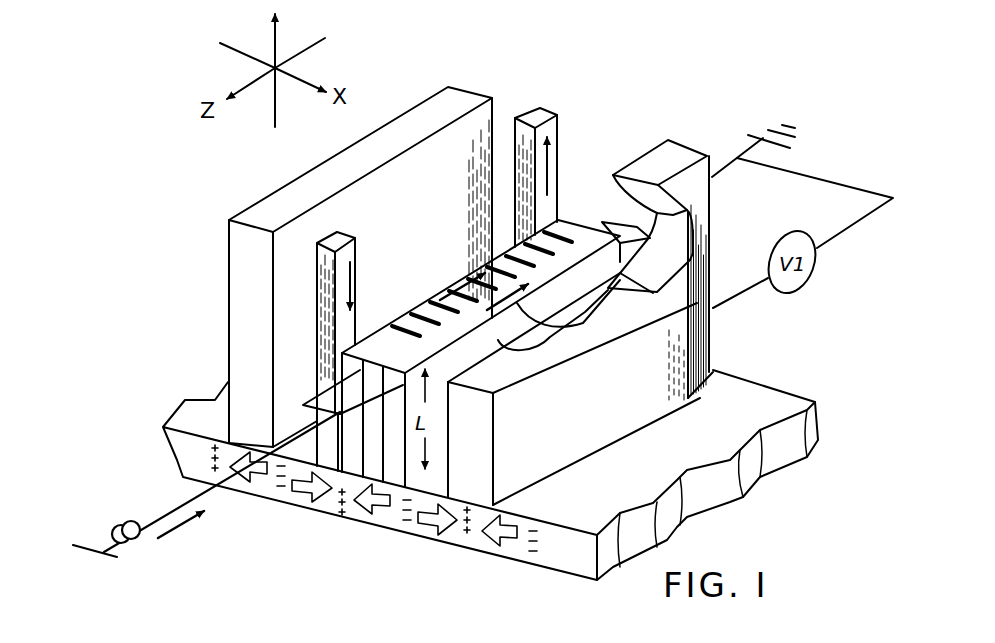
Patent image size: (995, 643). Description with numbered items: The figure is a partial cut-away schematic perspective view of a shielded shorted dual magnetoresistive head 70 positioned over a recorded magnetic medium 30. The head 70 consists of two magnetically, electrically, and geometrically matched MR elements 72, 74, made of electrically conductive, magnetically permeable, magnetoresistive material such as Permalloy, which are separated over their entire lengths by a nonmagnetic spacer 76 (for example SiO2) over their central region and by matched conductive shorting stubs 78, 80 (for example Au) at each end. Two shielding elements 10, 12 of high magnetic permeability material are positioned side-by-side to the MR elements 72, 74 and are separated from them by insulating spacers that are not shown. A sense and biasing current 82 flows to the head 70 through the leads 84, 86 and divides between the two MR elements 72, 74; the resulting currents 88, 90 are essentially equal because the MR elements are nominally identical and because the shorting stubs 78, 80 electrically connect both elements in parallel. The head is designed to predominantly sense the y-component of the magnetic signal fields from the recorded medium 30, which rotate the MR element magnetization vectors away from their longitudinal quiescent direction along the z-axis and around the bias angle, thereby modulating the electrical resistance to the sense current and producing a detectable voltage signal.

The shielding element 10 is at (457, 98).
The shielding element 12 is at (673, 153).
The recorded magnetic medium 30 is at (772, 397).
The dual magnetoresistive head 70 is at (732, 84).
The MR element 72 is at (345, 438).
The MR element 74 is at (395, 462).
The nonmagnetic spacer 76 is at (545, 238).
The shorting stub 78 is at (587, 233).
The shorting stub 80 is at (372, 442).
The sense and biasing current 82 is at (356, 272).
The lead 84 is at (538, 112).
The lead 86 is at (336, 236).
The current 88 is at (457, 288).
The current 90 is at (523, 307).